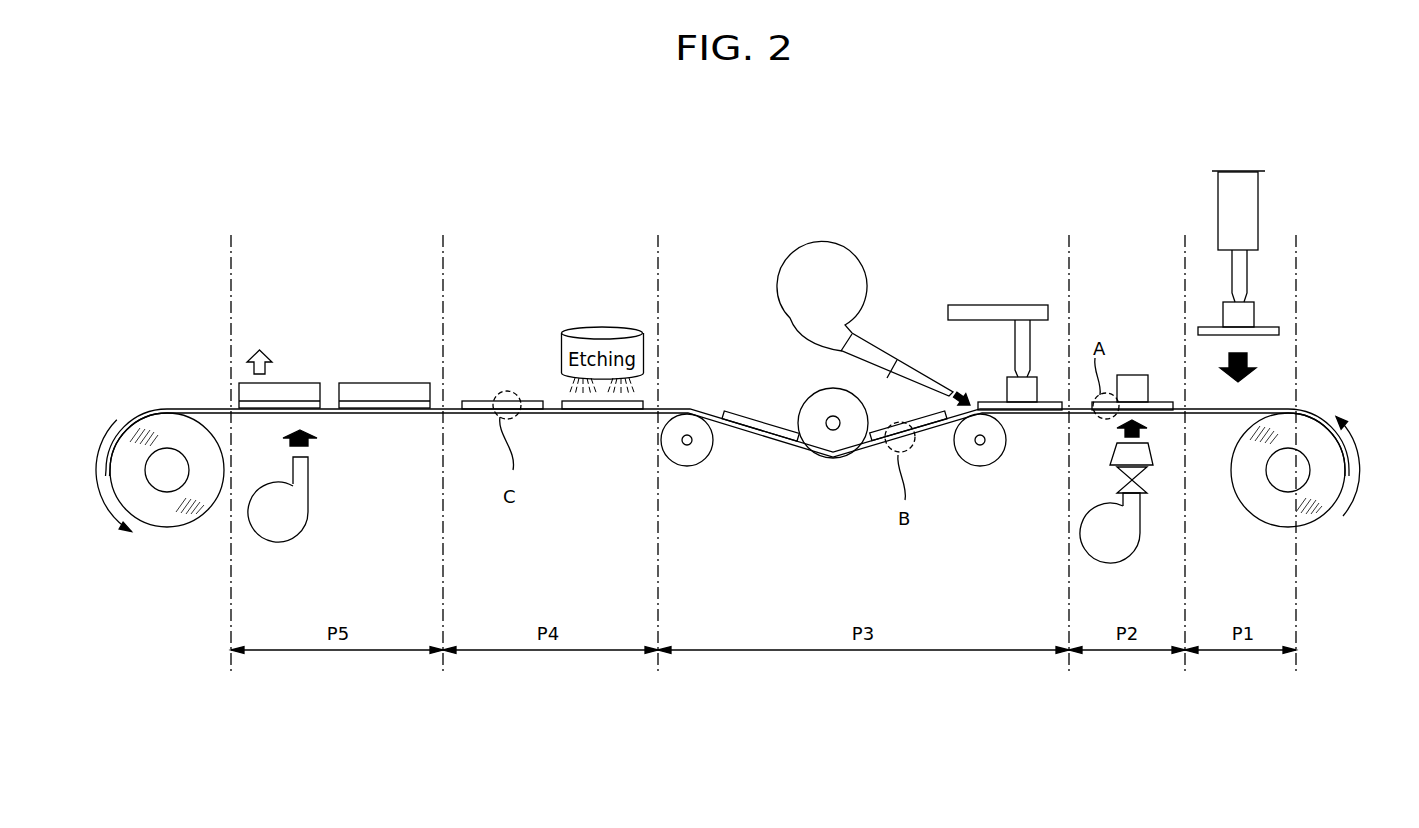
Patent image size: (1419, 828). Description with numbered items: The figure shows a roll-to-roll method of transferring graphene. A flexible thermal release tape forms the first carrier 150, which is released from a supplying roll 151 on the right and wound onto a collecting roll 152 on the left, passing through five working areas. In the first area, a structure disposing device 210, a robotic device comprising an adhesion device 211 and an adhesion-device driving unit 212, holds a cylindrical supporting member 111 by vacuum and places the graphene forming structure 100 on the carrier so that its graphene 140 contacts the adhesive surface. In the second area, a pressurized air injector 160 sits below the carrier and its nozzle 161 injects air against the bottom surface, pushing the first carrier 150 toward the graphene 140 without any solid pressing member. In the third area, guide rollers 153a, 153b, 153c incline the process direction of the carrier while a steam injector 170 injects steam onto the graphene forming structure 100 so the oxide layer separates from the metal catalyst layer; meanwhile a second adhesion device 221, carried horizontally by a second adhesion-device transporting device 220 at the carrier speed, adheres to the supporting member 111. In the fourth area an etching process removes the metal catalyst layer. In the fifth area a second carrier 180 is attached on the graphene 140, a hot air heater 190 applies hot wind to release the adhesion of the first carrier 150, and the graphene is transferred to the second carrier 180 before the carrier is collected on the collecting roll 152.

The graphene forming structure 100 is at (1156, 400).
The supporting member 111 is at (1007, 380).
The graphene 140 is at (478, 400).
The first carrier 150 is at (1247, 407).
The supplying roll 151 is at (1313, 512).
The collecting roll 152 is at (160, 527).
The guide roller 153a is at (978, 465).
The guide roller 153b is at (835, 447).
The guide roller 153c is at (698, 463).
The pressurized air injector 160 is at (1150, 545).
The nozzle 161 is at (1112, 453).
The steam injector 170 is at (862, 240).
The second carrier 180 is at (383, 382).
The hot air heater 190 is at (292, 540).
The structure disposing device 210 is at (1293, 231).
The adhesion device 211 is at (1245, 277).
The adhesion-device driving unit 212 is at (1253, 178).
The second adhesion-device transporting device 220 is at (978, 303).
The second adhesion device 221 is at (1015, 345).